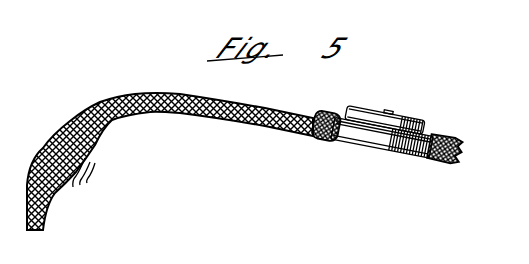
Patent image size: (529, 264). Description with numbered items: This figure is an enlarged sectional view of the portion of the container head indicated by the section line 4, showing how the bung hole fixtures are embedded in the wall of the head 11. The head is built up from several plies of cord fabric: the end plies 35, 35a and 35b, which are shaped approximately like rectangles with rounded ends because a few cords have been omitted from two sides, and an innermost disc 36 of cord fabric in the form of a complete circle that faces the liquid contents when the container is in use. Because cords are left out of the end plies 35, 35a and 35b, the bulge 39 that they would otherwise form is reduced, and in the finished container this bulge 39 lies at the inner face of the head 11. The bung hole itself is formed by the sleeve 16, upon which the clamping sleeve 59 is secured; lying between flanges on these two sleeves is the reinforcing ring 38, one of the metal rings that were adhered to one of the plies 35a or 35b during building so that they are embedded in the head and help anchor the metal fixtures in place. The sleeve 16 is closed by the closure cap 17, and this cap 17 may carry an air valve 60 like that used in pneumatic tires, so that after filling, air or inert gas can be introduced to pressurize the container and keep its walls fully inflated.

The section line 4- 4 is at (13, 143).
The head 11 is at (142, 37).
The sleeve 16 is at (358, 142).
The closure cap 17 is at (416, 117).
The end ply 35 is at (282, 124).
The end ply 35a is at (233, 118).
The end ply 35b is at (196, 113).
The disc 36 is at (123, 117).
The metal rings 38 is at (322, 141).
The bulge 39 is at (74, 184).
The clamping sleeve 59 is at (430, 132).
The air valve 60 is at (384, 104).